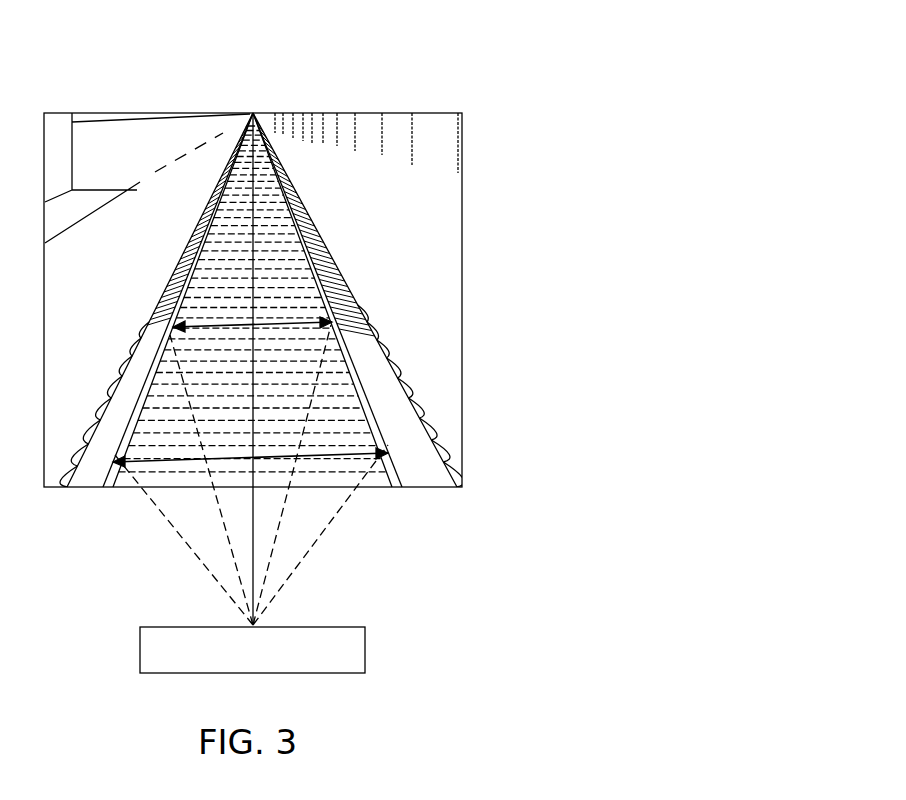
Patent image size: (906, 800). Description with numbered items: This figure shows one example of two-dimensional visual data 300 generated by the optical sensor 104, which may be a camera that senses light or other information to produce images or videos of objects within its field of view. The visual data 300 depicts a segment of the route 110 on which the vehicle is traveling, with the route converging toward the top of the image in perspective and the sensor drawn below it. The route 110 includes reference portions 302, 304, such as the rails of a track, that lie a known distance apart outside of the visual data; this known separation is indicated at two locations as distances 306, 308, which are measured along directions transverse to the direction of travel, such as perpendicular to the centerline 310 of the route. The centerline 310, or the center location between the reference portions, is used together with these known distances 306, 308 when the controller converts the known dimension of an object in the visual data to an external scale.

The visual data 300 is at (462, 76).
The route 110 is at (160, 263).
The reference portion 302 is at (140, 346).
The centerline 310 is at (218, 192).
The reference portion 304 is at (348, 330).
The known distance 308 is at (305, 320).
The known distance 306 is at (345, 445).
The optical sensor 104 is at (366, 650).